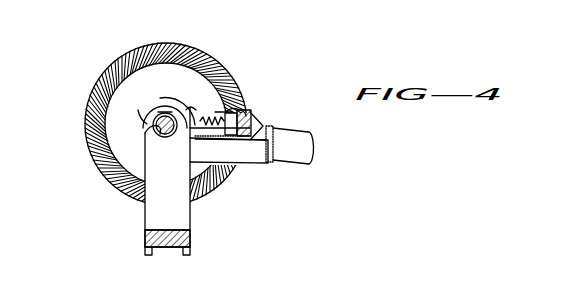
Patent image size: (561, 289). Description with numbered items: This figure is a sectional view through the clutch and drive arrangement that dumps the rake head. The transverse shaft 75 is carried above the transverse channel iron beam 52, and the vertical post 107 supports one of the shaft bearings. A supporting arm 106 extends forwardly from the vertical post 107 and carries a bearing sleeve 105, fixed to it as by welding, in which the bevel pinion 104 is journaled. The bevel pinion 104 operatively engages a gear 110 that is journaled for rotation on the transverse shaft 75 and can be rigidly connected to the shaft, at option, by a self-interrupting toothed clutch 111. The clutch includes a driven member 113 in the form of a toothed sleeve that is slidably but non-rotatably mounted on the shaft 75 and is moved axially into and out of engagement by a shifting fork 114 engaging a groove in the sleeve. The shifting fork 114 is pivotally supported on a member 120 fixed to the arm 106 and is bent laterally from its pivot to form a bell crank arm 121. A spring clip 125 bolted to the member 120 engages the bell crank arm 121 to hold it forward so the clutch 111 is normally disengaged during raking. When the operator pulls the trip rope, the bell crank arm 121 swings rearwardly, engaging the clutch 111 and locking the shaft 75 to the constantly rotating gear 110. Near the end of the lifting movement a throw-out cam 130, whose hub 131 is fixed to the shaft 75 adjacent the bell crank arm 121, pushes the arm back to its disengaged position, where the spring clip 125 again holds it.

The transverse channel iron beam 52 is at (190, 243).
The transverse shaft 75 is at (170, 136).
The bevel pinion 104 is at (252, 130).
The bearing sleeve 105 is at (268, 136).
The supporting arm 106 is at (224, 152).
The vertical post 107 is at (164, 204).
The gear 110 is at (92, 123).
The self-interrupting toothed clutch 111 is at (203, 108).
The driven member 113 is at (164, 112).
The shifting fork 114 is at (192, 110).
The member 120 is at (258, 132).
The bell crank arm 121 is at (229, 145).
The spring clip 125 is at (222, 112).
The throw-out cam 130 is at (140, 114).
The hub 131 is at (153, 133).